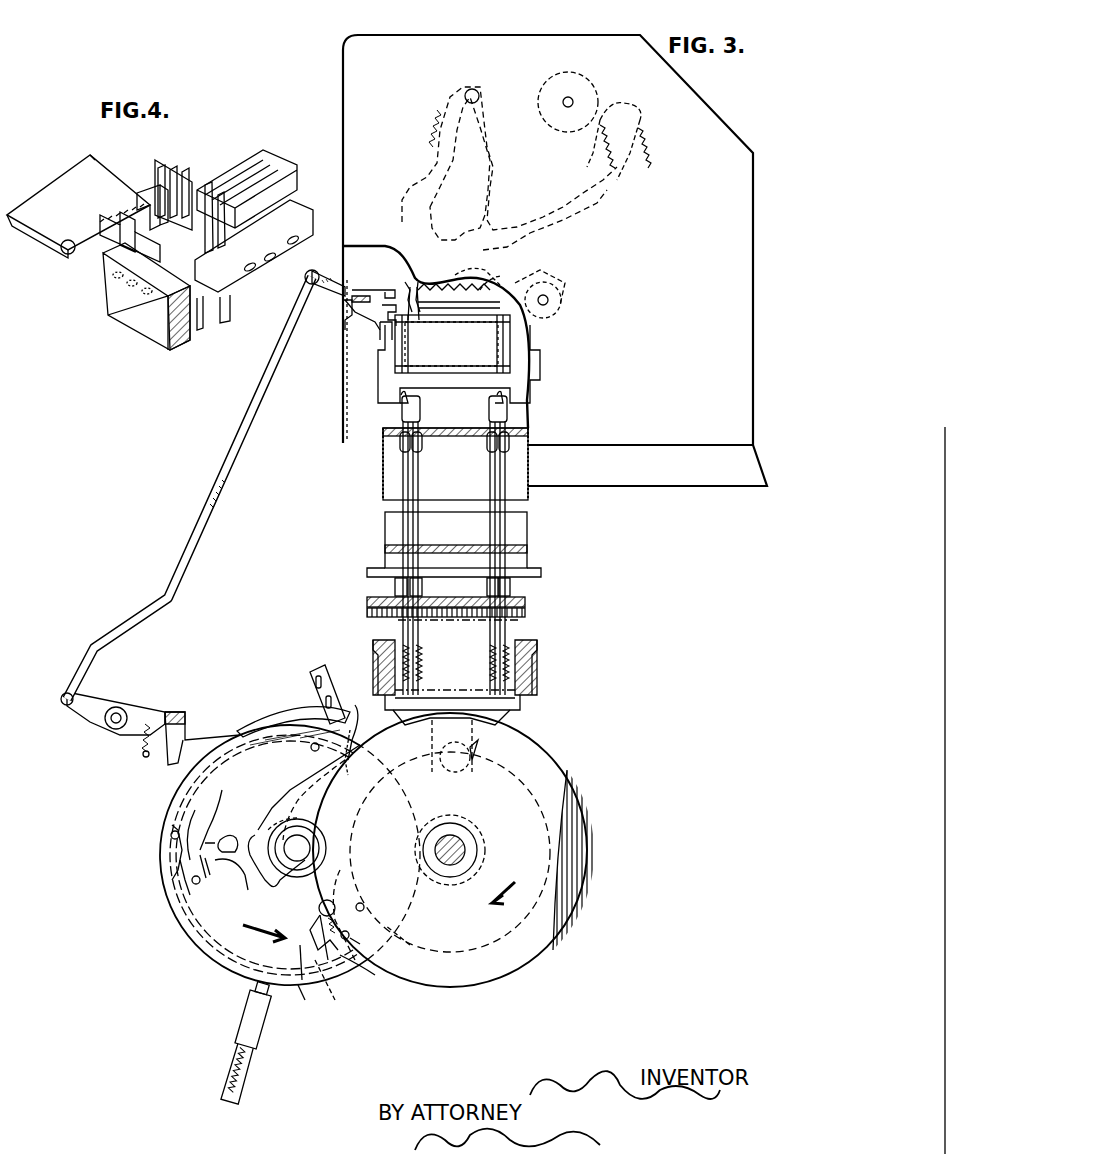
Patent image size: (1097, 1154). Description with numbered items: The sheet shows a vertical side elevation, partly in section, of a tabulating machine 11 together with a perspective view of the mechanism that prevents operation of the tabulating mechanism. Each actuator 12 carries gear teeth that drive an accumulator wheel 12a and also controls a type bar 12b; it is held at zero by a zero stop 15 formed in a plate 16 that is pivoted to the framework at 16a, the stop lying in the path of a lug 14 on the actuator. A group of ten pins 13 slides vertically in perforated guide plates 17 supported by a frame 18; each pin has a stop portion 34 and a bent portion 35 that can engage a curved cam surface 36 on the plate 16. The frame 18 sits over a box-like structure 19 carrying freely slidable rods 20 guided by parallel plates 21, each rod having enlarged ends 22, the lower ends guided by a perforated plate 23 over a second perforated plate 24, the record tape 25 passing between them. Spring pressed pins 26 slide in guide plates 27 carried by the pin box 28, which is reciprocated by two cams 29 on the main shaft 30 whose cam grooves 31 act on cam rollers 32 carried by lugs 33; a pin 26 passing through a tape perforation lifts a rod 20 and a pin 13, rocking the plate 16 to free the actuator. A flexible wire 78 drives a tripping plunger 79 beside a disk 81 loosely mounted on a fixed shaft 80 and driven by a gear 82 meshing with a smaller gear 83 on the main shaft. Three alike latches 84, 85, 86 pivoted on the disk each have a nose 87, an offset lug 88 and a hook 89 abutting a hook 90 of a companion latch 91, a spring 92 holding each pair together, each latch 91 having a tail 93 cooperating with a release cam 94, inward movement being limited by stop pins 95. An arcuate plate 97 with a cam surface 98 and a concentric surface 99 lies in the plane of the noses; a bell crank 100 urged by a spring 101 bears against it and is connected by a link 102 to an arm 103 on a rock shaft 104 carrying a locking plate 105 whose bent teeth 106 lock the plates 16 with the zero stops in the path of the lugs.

In FIG. 3, the tabulating machine 11 is at (357, 90).
In FIG. 3, the actuator 12 is at (420, 186).
In FIG. 3, the accumulator wheel 12a is at (563, 300).
In FIG. 3, the type bar 12b is at (630, 108).
In FIG. 3, the pin 13 is at (502, 345).
In FIG. 4, the pin 13 is at (222, 315).
In FIG. 3, the lug 14 is at (402, 292).
In FIG. 3, the zero stop 15 is at (412, 285).
In FIG. 4, the zero stop 15 is at (190, 178).
In FIG. 3, the plate 16 is at (392, 325).
In FIG. 4, the plate 16 is at (160, 292).
In FIG. 4, the pivot 16a is at (117, 278).
In FIG. 3, the guide plate 17 is at (456, 362).
In FIG. 3, the frame 18 is at (385, 395).
In FIG. 3, the cylinder 19 is at (528, 527).
In FIG. 3, the rod 20 is at (492, 468).
In FIG. 3, the parallel plate 21 is at (512, 443).
In FIG. 3, the enlarged end 22 is at (500, 423).
In FIG. 3, the perforated plate 23 is at (526, 602).
In FIG. 3, the perforated plate 24 is at (526, 614).
In FIG. 3, the record tape 25 is at (440, 612).
In FIG. 3, the spring pressed pin 26 is at (488, 665).
In FIG. 3, the guide plate 27 is at (440, 657).
In FIG. 3, the pin box 28 is at (538, 690).
In FIG. 3, the cam 29 is at (565, 900).
In FIG. 3, the main shaft 30 is at (450, 856).
In FIG. 3, the cam groove 31 is at (570, 852).
In FIG. 3, the cam roller 32 is at (475, 757).
In FIG. 3, the lug 33 is at (435, 712).
In FIG. 3, the stop portion 34 is at (413, 292).
In FIG. 4, the stop portion 34 is at (218, 195).
In FIG. 3, the bent portion 35 is at (470, 298).
In FIG. 4, the bent portion 35 is at (222, 245).
In FIG. 3, the cam surface 36 is at (475, 292).
In FIG. 4, the cam surface 36 is at (282, 170).
In FIG. 3, the flexible wire 78 is at (228, 1100).
In FIG. 3, the tripping plunger 79 is at (248, 982).
In FIG. 3, the fixed shaft 80 is at (285, 865).
In FIG. 3, the disk 81 is at (302, 980).
In FIG. 3, the gear 82 is at (335, 1000).
In FIG. 3, the gear 83 is at (487, 855).
In FIG. 3, the latch 84 is at (315, 751).
In FIG. 3, the latch 85 is at (352, 960).
In FIG. 3, the latch 86 is at (172, 855).
In FIG. 3, the nose 87 is at (166, 908).
In FIG. 3, the lug 88 is at (172, 838).
In FIG. 3, the hook 89 is at (335, 983).
In FIG. 3, the hook 90 is at (302, 948).
In FIG. 3, the latch 91 is at (318, 908).
In FIG. 3, the spring 92 is at (228, 840).
In FIG. 3, the tail 93 is at (298, 798).
In FIG. 3, the release cam 94 is at (252, 842).
In FIG. 3, the stop pin 95 is at (308, 748).
In FIG. 3, the arcuate plate 97 is at (272, 718).
In FIG. 3, the cam surface 98 is at (338, 720).
In FIG. 3, the surface 99 is at (232, 735).
In FIG. 3, the bell crank 100 is at (155, 712).
In FIG. 3, the spring 101 is at (143, 752).
In FIG. 3, the link 102 is at (178, 580).
In FIG. 3, the arm 103 is at (333, 290).
In FIG. 3, the rock shaft 104 is at (345, 328).
In FIG. 4, the rock shaft 104 is at (112, 273).
In FIG. 3, the locking plate 105 is at (342, 270).
In FIG. 4, the locking plate 105 is at (40, 232).
In FIG. 3, the tooth 106 is at (398, 315).
In FIG. 4, the tooth 106 is at (148, 192).